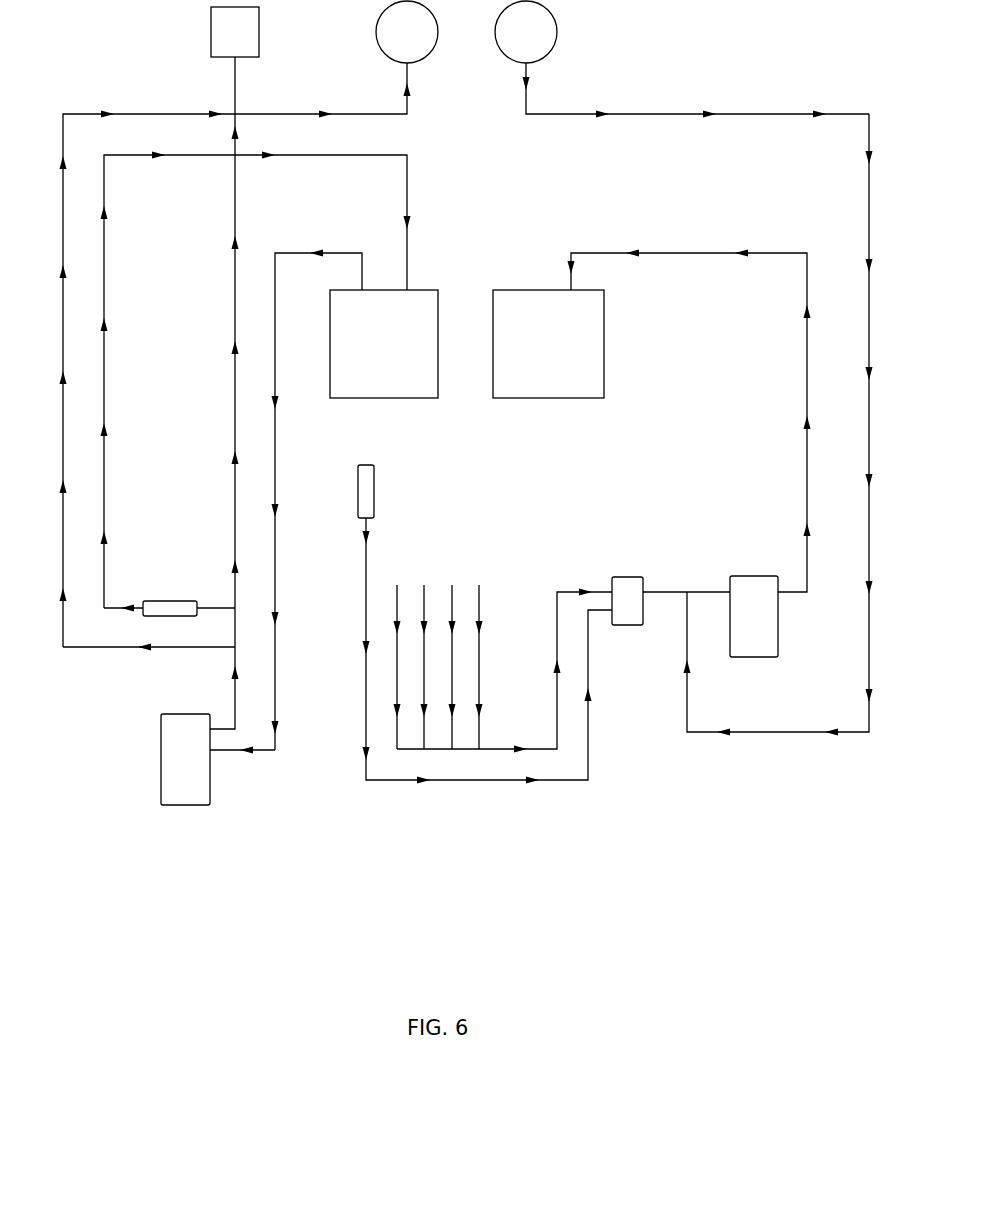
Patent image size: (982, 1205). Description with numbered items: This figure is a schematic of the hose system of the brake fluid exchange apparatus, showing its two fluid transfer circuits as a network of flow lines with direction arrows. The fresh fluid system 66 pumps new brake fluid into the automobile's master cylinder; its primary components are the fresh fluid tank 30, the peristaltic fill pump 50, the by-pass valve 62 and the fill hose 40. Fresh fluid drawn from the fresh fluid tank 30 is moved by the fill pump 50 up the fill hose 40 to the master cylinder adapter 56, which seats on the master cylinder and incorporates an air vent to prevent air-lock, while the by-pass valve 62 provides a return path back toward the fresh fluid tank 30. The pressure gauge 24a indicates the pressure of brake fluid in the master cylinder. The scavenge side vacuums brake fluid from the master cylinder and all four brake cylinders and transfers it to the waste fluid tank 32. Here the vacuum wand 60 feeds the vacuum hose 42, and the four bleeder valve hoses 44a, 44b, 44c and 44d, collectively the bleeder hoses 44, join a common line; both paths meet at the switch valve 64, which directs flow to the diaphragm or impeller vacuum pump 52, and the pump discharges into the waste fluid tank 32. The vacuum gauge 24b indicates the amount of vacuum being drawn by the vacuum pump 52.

The master cylinder adapter 56 is at (235, 32).
The vacuum gauge 24b is at (407, 48).
The pressure gauge 24a is at (682, 59).
The fill hose 40 is at (235, 284).
The fresh fluid tank 30 is at (384, 344).
The waste fluid tank 32 is at (548, 344).
The vacuum wand 60 is at (375, 482).
The by-pass valve 62 is at (162, 601).
The vacuum hose 42 is at (475, 780).
The bleeder valve hoses 44 is at (557, 635).
The bleeder valve hose 44a is at (397, 645).
The bleeder valve hose 44b is at (424, 645).
The bleeder valve hose 44c is at (452, 646).
The bleeder valve hose 44d is at (479, 645).
The switch valve 64 is at (626, 584).
The vacuum pump 52 is at (754, 616).
The fill pump 50 is at (185, 759).
The fresh fluid system 66 is at (102, 677).